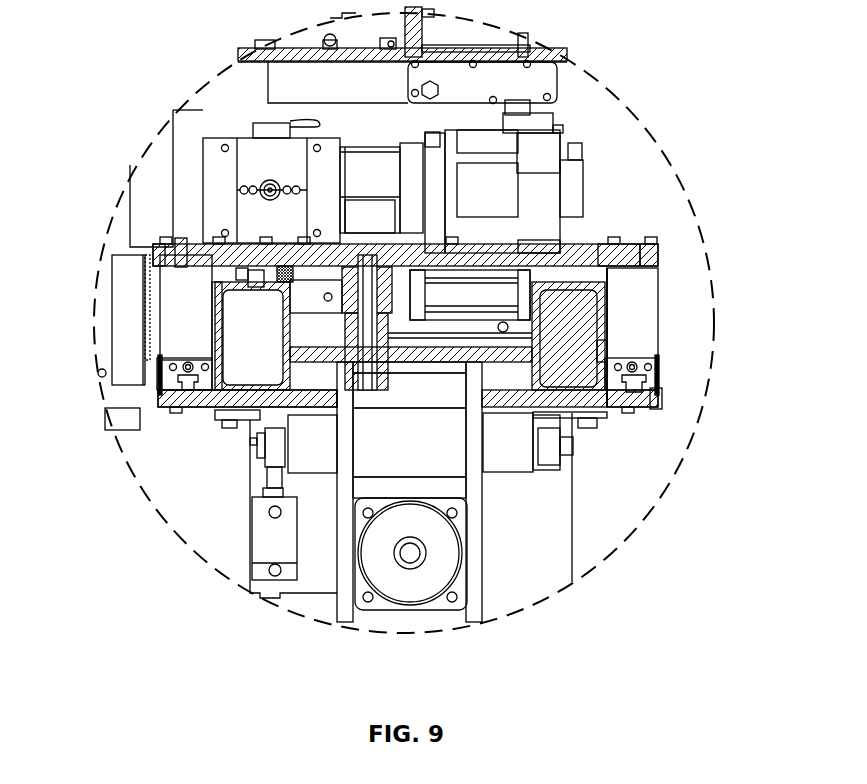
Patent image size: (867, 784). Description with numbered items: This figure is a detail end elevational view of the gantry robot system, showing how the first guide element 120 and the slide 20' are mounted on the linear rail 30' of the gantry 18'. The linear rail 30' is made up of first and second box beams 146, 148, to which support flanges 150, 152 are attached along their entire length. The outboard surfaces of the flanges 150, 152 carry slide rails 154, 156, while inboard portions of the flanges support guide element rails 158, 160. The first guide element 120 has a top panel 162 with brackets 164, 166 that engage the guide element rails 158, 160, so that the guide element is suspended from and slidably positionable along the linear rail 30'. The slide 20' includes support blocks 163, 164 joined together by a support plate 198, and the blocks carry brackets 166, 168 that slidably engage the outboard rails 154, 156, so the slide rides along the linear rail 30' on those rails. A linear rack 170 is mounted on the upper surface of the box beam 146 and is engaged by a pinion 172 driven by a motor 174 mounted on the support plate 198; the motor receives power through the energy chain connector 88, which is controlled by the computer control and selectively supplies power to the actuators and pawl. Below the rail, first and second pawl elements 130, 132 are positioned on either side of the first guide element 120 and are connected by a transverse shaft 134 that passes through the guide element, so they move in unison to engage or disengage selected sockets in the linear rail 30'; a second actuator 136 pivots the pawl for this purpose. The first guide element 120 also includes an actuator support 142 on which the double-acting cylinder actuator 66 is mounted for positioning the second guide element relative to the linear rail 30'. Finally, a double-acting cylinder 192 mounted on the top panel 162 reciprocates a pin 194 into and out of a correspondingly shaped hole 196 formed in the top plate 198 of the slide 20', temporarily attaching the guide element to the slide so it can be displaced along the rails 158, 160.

The motor 174 is at (258, 160).
The pin 194 is at (327, 255).
The hole 196 is at (377, 233).
The energy chain connector 88 is at (455, 292).
The linear rack 170 is at (272, 266).
The pinion 172 is at (271, 287).
The double-acting cylinder 192 is at (290, 361).
The support block 163 is at (180, 290).
The first box beam 146 is at (218, 340).
The bracket 166 is at (163, 367).
The slide rail 154 is at (183, 383).
The support flange 150 is at (175, 403).
The second pawl element 132 is at (277, 417).
The transverse shaft 134 is at (250, 443).
The second actuator 136 is at (265, 520).
The guide element rail 158 is at (320, 388).
The bracket 164 is at (325, 370).
The top panel 162 is at (395, 352).
The guide element rail 160 is at (537, 363).
The second box beam 148 is at (602, 298).
The gantry 18' is at (657, 337).
The slide 20' is at (690, 246).
The linear rail 30' is at (678, 334).
The support plate 198 is at (660, 244).
The bracket 168 is at (662, 365).
The slide rail 156 is at (660, 388).
The first pawl element 130 is at (550, 420).
The support flange 152 is at (637, 400).
The first guide element 120 is at (490, 514).
The actuator support 142 is at (477, 555).
The first double-acting cylinder actuator 66 is at (440, 563).